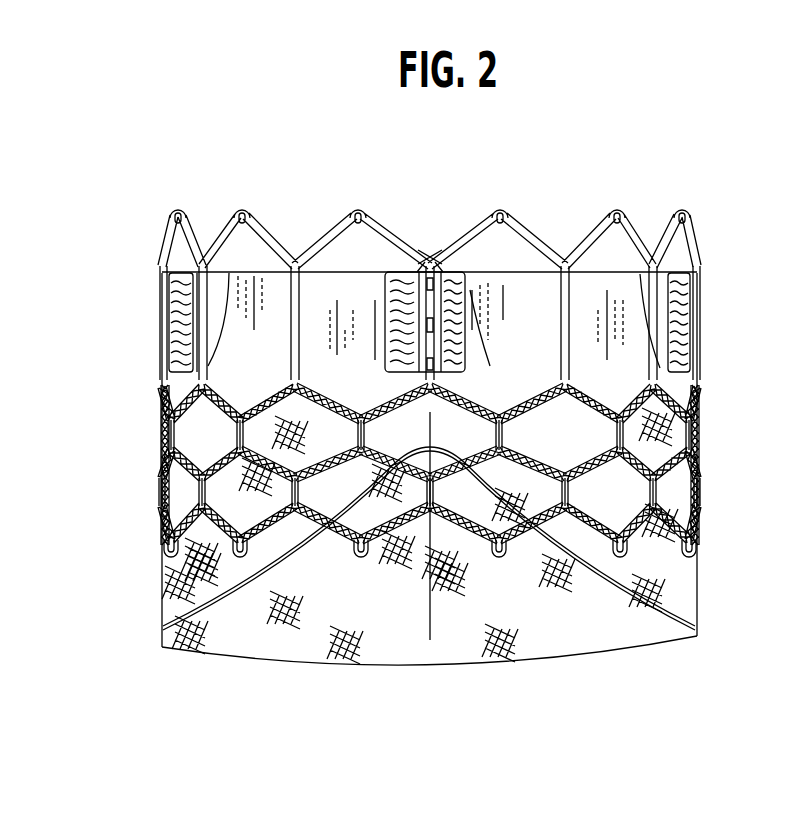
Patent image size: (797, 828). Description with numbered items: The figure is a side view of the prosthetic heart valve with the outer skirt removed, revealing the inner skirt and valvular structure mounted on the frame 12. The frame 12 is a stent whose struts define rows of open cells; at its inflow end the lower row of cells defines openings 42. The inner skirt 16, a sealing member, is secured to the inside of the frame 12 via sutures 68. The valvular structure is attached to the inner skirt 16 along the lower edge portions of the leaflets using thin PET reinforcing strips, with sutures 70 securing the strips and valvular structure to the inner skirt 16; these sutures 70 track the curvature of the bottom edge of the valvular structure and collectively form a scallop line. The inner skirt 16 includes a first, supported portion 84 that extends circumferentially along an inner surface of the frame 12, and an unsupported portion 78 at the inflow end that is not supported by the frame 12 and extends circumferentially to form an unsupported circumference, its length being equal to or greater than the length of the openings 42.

The frame 12 is at (690, 240).
The inner skirt 16 is at (695, 543).
The openings 42 is at (677, 487).
The sutures 68 is at (698, 402).
The sutures 70 is at (605, 585).
The unsupported portion 78 is at (695, 590).
The first portion 84 is at (160, 433).